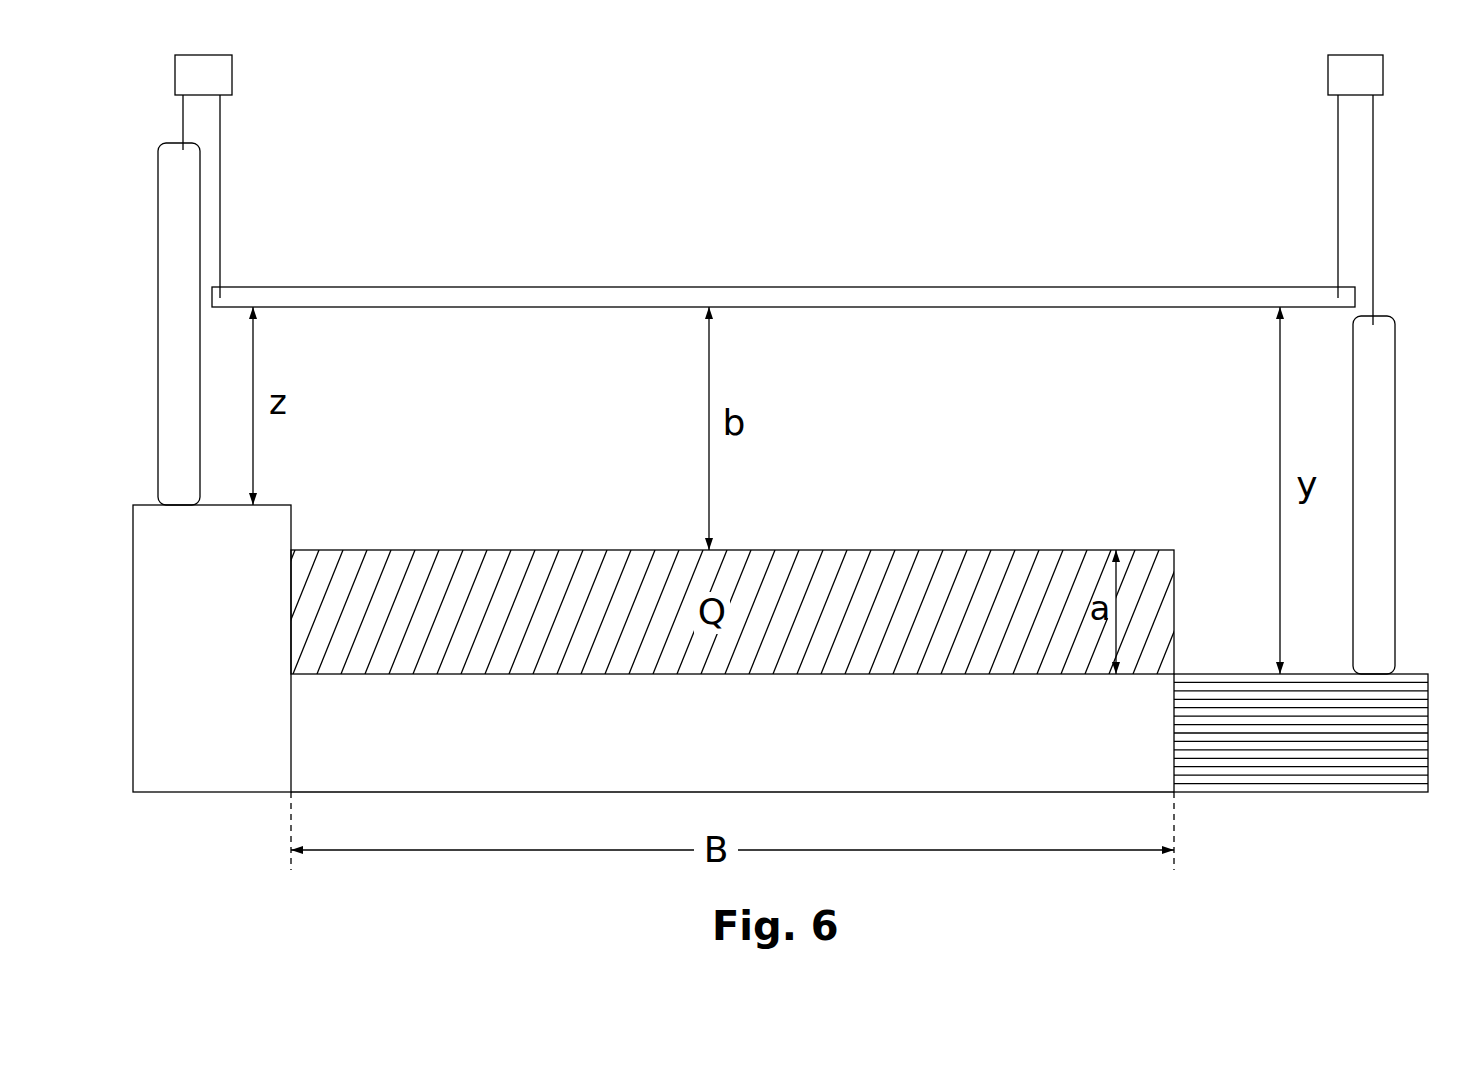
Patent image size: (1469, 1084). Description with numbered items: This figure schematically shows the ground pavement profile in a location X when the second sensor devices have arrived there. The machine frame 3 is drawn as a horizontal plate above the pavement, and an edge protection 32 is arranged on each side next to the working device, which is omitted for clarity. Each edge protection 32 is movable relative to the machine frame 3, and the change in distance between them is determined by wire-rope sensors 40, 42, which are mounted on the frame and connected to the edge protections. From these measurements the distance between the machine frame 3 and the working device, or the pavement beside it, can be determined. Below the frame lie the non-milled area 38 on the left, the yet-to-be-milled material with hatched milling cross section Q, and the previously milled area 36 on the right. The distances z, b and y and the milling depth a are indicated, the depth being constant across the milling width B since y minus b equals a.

The machine frame 3 is at (624, 236).
The edge protection 32 is at (178, 258).
The previously milled area 36 is at (1315, 740).
The non-milled area 38 is at (212, 740).
The wire-rope sensor 40 is at (1347, 78).
The wire-rope sensor 42 is at (212, 75).